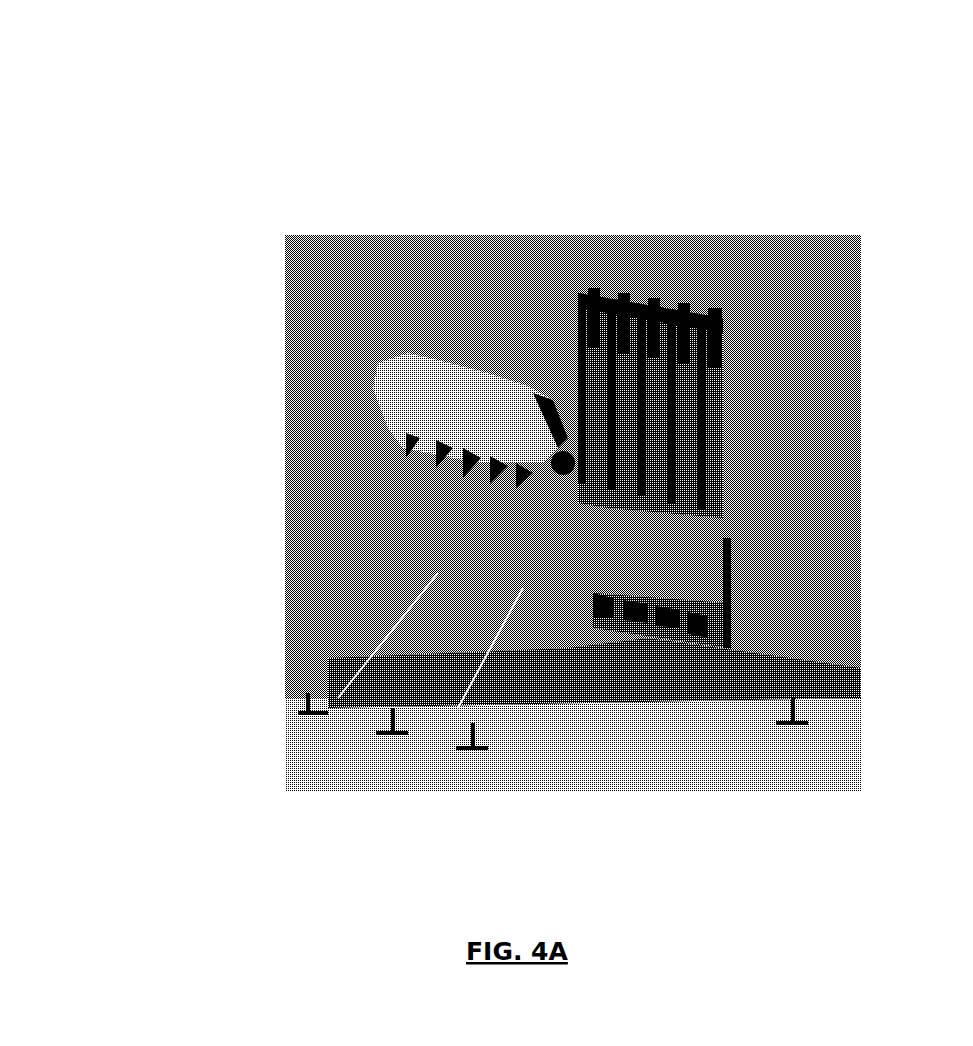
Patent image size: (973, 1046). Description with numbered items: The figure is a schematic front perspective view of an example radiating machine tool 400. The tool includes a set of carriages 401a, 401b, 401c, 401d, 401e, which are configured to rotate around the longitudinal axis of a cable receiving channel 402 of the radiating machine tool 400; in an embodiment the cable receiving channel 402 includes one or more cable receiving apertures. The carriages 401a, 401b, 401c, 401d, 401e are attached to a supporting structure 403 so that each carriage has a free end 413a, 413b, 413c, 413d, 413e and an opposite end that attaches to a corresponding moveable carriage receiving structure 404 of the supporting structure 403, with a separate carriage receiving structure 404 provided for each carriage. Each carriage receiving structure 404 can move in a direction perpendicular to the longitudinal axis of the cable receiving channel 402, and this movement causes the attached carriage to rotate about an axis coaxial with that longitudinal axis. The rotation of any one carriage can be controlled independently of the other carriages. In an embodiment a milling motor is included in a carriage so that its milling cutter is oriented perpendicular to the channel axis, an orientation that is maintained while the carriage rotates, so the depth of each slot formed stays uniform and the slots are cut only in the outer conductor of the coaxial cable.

The radiating machine tool 400 is at (733, 227).
The carriage 401a is at (550, 227).
The carriage 401b is at (475, 227).
The carriage 401c is at (450, 227).
The carriage 401d is at (395, 227).
The carriage 401e is at (330, 227).
The cable receiving channel 402 is at (855, 458).
The supporting structure 403 is at (690, 787).
The carriage receiving structure 404 is at (855, 582).
The free end 413a is at (277, 560).
The free end 413b is at (277, 485).
The free end 413c is at (277, 440).
The free end 413d is at (277, 405).
The free end 413e is at (277, 342).